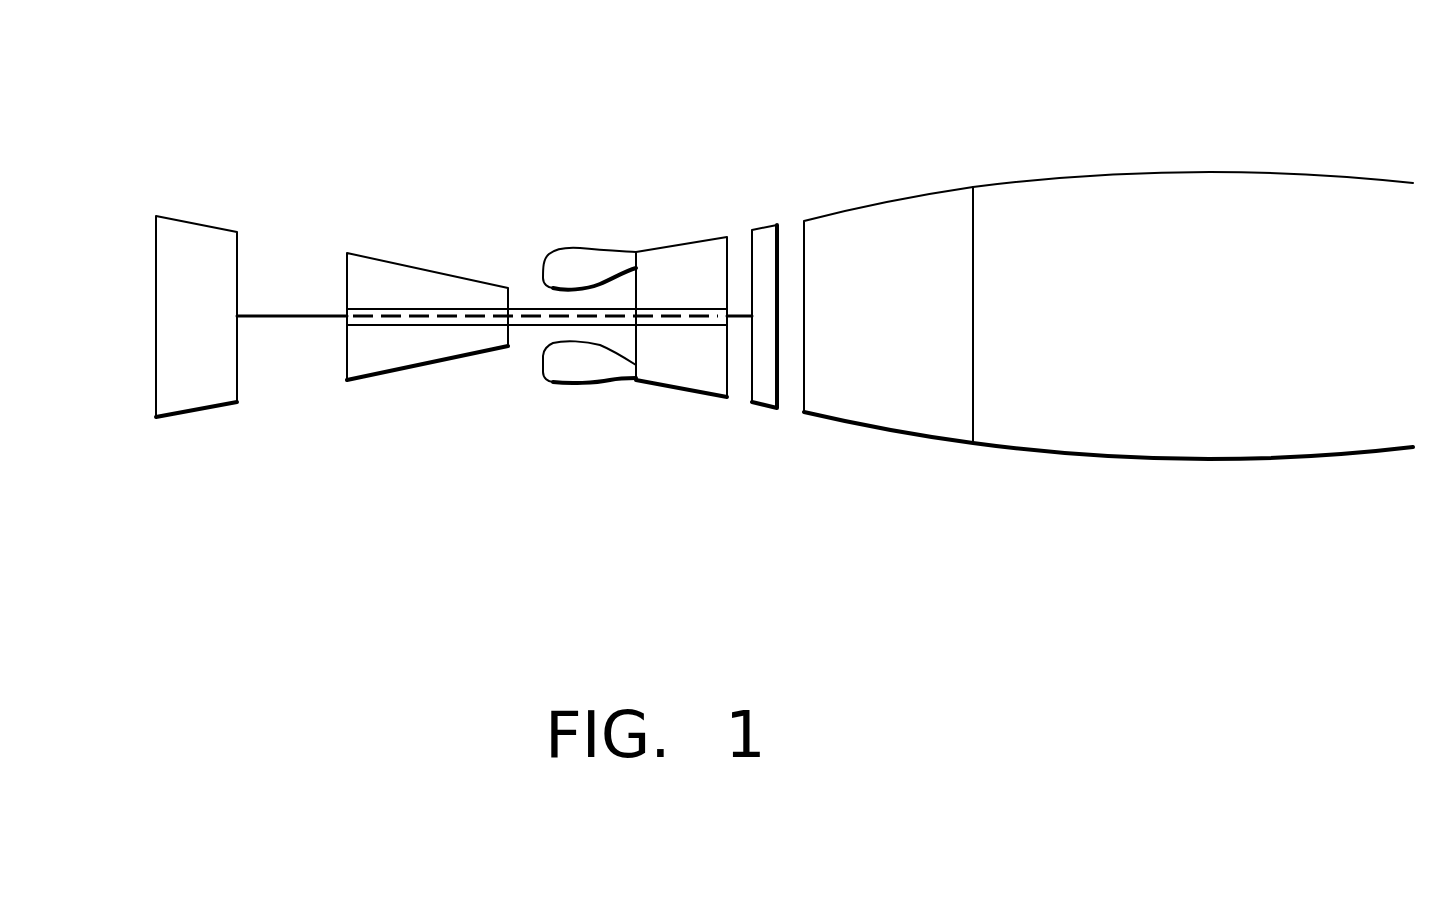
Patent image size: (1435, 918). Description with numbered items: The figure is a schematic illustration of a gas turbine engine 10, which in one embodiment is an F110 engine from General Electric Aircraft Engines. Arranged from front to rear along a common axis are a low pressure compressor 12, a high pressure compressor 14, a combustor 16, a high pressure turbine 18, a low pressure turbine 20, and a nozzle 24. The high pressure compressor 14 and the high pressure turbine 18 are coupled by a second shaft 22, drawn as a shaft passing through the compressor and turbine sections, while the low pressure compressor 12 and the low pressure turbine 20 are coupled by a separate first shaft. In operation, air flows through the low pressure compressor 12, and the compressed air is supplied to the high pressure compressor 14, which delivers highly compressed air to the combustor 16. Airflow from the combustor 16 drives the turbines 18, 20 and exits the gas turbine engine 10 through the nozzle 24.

The gas turbine engine 10 is at (1170, 132).
The low pressure compressor 12 is at (218, 403).
The high pressure compressor 14 is at (470, 357).
The combustor 16 is at (579, 387).
The high pressure turbine 18 is at (697, 397).
The low pressure turbine 20 is at (758, 402).
The second shaft 22 is at (528, 307).
The nozzle 24 is at (1032, 453).